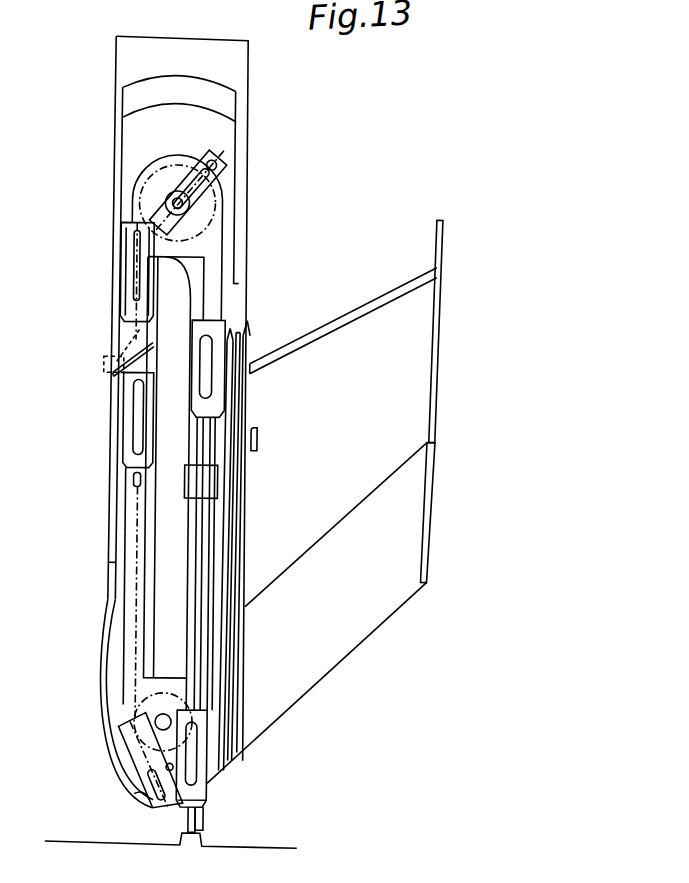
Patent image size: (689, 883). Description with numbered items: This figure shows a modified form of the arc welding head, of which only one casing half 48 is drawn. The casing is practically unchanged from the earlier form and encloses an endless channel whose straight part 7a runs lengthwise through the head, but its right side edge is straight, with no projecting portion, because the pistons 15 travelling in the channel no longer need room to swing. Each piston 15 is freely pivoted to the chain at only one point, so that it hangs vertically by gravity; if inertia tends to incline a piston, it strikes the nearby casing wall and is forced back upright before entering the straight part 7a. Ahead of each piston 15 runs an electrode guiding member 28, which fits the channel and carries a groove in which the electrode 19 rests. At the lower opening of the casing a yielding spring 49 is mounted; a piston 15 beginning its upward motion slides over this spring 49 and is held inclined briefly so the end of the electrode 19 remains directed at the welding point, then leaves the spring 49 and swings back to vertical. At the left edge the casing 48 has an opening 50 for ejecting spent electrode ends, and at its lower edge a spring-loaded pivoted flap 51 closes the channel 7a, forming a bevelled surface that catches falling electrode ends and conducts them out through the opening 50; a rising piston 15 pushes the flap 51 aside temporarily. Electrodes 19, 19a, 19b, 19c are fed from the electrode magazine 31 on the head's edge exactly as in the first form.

The straight part of the channel 7a is at (185, 438).
The piston 15 is at (223, 176).
The electrode 19 is at (189, 815).
The electrode 19a is at (199, 823).
The electrode 19b is at (216, 707).
The electrode 19c is at (223, 693).
The electrode guiding member 28 is at (208, 490).
The electrode magazine 31 is at (439, 348).
The casing half 48 is at (119, 144).
The spring 49 is at (141, 798).
The opening 50 is at (116, 341).
The pivoted flap 51 is at (118, 373).